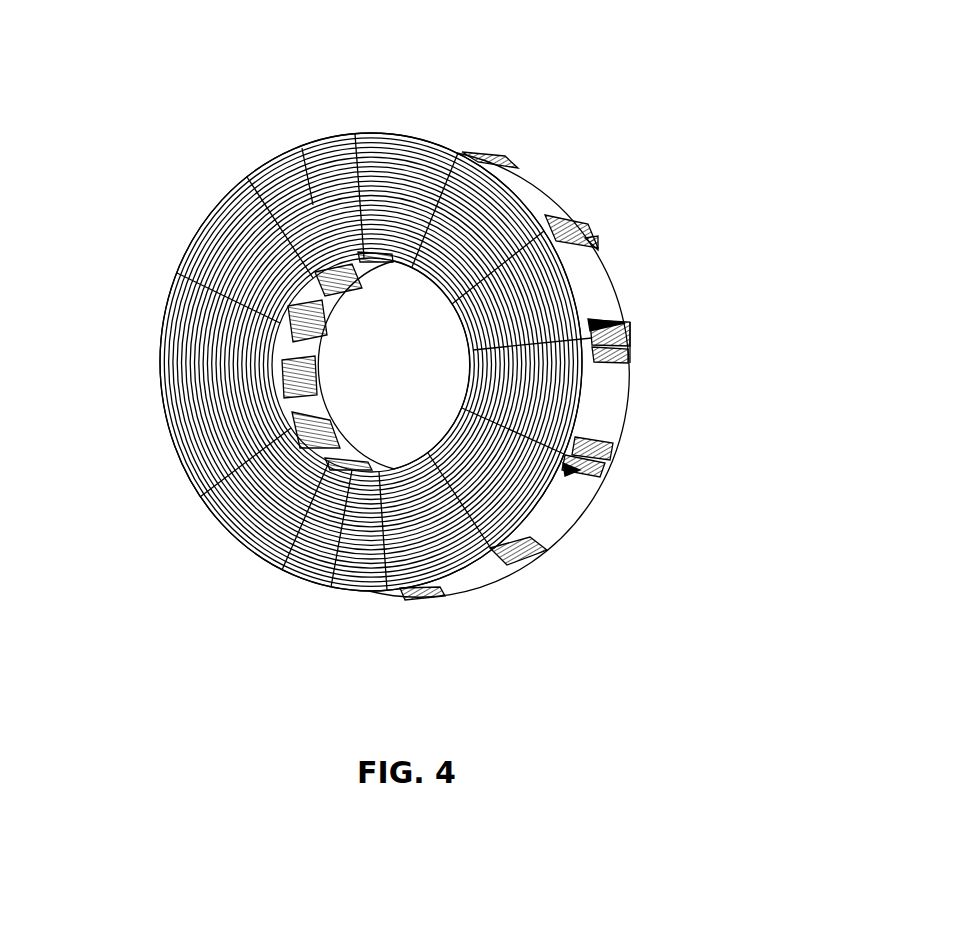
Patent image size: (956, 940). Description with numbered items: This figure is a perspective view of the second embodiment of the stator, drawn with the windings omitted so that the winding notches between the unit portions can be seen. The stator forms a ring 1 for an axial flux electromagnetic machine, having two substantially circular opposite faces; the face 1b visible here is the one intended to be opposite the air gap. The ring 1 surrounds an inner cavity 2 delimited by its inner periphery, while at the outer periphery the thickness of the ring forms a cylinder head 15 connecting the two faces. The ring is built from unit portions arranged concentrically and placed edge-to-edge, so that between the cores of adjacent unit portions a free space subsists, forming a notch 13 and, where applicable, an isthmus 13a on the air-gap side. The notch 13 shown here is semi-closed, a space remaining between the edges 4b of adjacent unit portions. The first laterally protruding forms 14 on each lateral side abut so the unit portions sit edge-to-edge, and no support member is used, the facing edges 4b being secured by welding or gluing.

The ring 1 is at (458, 127).
The face 1b is at (302, 148).
The inner cavity 2 is at (387, 398).
The edges 4b is at (283, 320).
The notch 13 is at (630, 330).
The isthmus 13a is at (630, 347).
The first laterally protruding form 14 is at (562, 478).
The cylinder head 15 is at (540, 503).